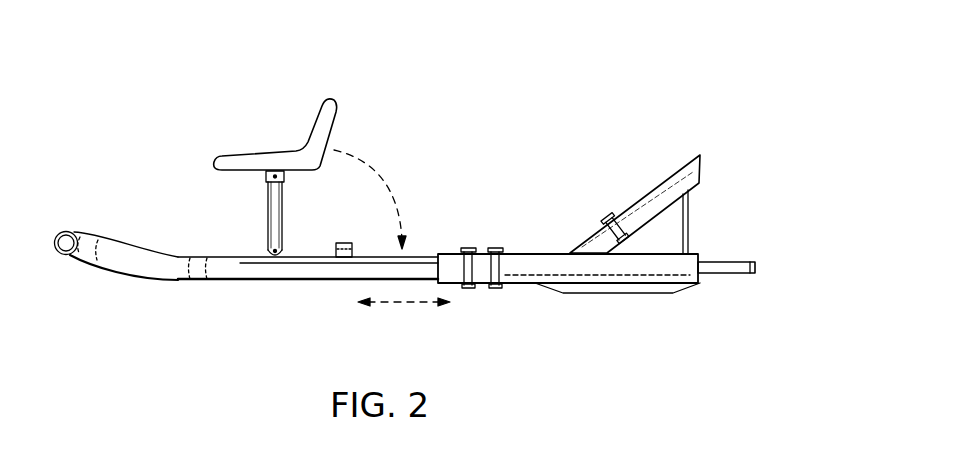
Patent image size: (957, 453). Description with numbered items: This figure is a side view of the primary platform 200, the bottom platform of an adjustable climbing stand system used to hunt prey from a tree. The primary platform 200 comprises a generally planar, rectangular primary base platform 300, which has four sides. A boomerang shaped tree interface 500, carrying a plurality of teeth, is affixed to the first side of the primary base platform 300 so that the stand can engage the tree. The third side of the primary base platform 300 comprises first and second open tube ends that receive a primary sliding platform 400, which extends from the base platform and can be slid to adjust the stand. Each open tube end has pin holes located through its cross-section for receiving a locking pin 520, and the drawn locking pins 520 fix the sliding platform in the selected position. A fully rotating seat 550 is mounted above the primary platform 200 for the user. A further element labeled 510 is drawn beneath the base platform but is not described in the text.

The trailer assembly 200 is at (634, 88).
The sleeve / receiver 300 is at (650, 267).
The curved frame tube 400 is at (120, 262).
The hitch tongue 500 is at (725, 268).
The bottom plate 510 is at (597, 293).
The U-bolt clamps 520 is at (494, 249).
The seat 550 is at (323, 110).